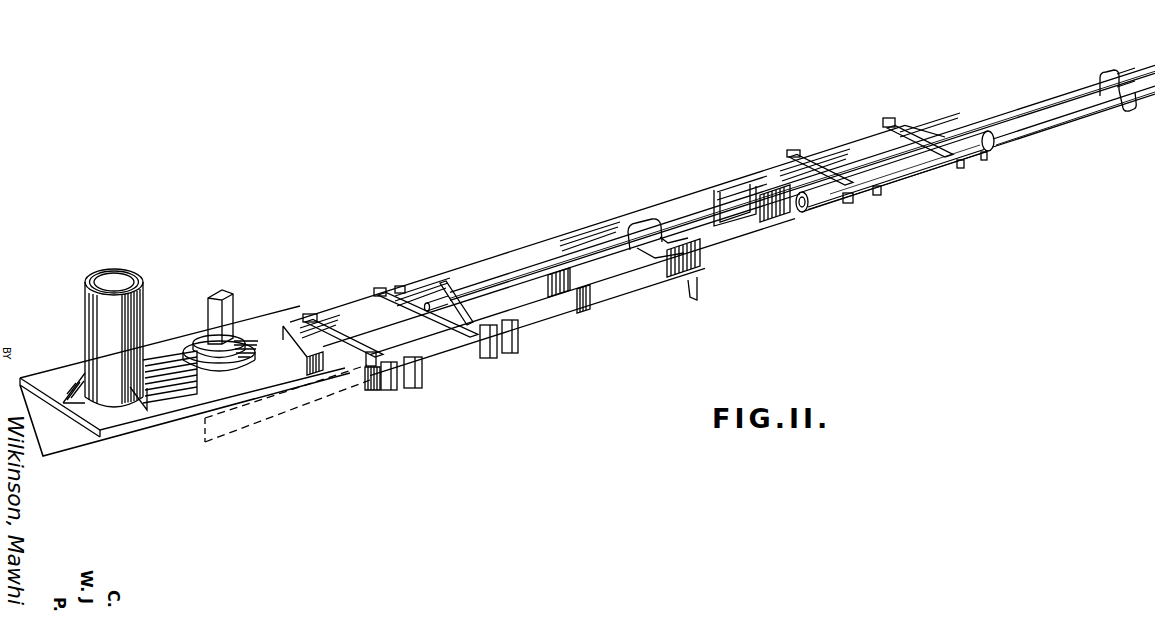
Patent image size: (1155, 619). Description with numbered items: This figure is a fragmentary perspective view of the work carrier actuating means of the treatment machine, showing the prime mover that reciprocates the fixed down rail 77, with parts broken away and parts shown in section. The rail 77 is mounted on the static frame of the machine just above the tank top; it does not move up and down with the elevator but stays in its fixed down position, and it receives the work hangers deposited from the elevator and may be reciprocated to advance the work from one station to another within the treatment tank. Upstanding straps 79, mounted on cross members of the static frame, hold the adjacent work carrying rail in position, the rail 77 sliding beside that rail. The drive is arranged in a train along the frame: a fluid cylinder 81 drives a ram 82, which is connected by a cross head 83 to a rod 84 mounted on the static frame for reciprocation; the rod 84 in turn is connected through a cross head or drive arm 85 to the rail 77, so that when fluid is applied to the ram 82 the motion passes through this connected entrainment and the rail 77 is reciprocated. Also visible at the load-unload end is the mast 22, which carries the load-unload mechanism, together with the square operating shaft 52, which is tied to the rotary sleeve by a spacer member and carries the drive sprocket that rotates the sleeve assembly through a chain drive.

The mast 22 is at (88, 310).
The square operating shaft 52 is at (236, 305).
The fixed down rail 77 is at (274, 425).
The upstanding straps 79 is at (428, 372).
The fluid cylinder 81 is at (932, 168).
The ram 82 is at (1030, 127).
The cross head 83 is at (1112, 70).
The rod 84 is at (540, 268).
The cross head or drive arm 85 is at (659, 258).